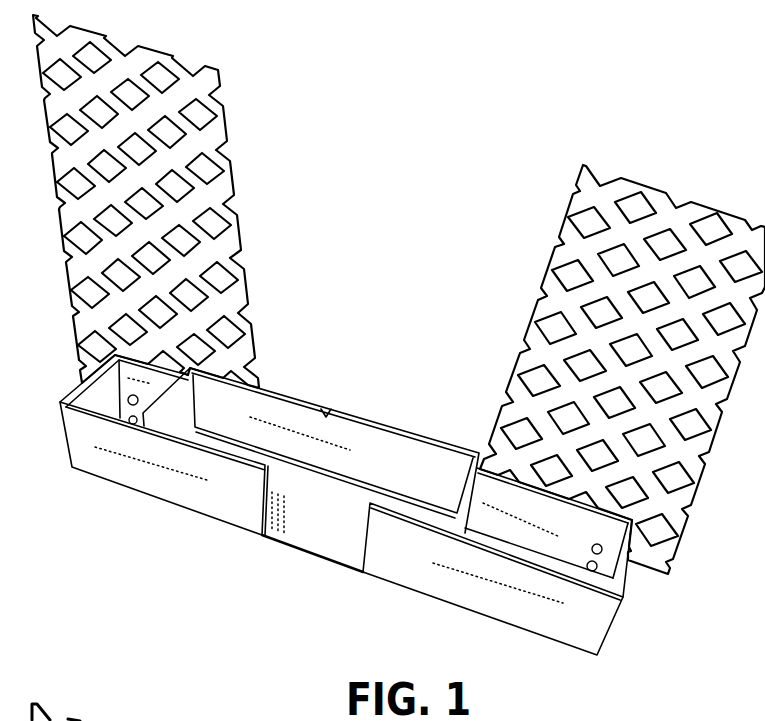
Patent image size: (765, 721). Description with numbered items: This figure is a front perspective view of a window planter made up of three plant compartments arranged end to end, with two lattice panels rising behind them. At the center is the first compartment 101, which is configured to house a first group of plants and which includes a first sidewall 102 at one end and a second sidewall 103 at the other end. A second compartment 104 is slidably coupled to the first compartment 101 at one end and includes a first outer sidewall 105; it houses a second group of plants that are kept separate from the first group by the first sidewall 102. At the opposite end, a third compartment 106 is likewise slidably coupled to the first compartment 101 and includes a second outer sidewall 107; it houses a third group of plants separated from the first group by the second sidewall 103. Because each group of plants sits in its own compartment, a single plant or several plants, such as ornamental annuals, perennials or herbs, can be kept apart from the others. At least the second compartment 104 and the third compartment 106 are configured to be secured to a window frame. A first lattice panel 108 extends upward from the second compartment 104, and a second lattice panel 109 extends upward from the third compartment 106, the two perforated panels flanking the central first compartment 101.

The first compartment 101 is at (320, 508).
The first sidewall 102 is at (170, 400).
The second sidewall 103 is at (467, 478).
The second compartment 104 is at (185, 488).
The first outer sidewall 105 is at (92, 395).
The third compartment 106 is at (475, 590).
The second outer sidewall 107 is at (593, 590).
The first lattice panel 108 is at (173, 80).
The second lattice panel 109 is at (657, 196).